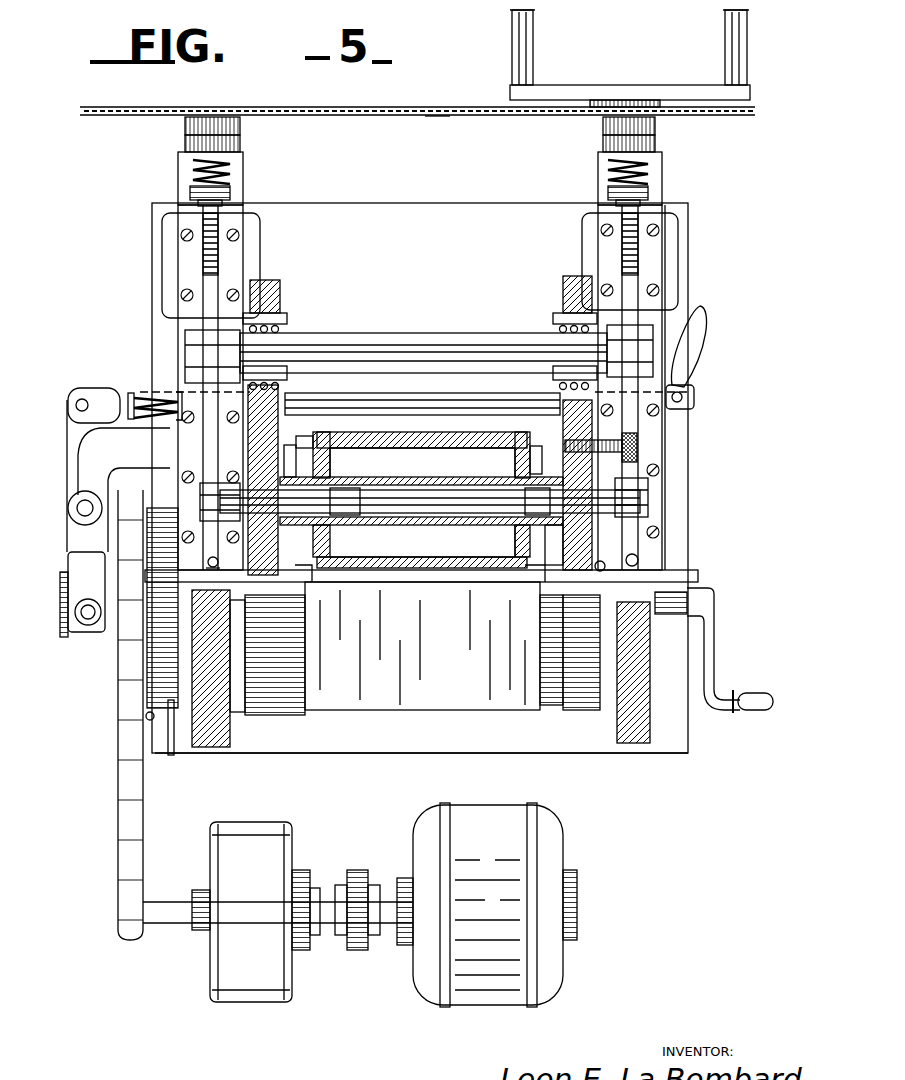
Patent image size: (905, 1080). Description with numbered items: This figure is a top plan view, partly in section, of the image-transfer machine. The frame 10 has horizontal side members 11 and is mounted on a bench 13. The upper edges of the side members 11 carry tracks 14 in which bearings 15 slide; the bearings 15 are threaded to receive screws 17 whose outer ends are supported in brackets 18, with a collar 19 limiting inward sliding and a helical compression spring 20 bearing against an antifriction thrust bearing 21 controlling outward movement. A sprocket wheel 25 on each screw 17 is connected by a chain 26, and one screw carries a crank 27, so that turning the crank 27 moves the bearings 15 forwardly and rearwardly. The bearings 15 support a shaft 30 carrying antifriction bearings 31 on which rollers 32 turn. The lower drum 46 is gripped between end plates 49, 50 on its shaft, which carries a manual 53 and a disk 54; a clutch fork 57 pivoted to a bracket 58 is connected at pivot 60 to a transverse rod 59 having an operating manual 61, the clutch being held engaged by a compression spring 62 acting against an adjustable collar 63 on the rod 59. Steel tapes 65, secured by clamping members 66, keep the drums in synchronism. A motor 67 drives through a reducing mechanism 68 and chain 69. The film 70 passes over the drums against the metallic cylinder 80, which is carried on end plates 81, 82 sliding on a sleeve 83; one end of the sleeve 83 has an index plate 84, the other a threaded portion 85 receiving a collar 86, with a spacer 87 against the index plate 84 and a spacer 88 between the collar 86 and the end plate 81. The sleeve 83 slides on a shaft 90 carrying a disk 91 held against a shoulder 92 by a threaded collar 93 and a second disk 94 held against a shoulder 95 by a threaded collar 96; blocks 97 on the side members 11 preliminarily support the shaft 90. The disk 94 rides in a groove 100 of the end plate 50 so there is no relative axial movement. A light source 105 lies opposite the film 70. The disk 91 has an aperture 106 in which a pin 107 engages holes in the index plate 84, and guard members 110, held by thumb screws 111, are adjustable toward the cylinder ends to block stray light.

The frame 10 is at (698, 519).
The side members 11 is at (215, 748).
The support or bench 13 is at (415, 753).
The tracks or ways 14 is at (245, 252).
The bearings 15 is at (185, 337).
The screws 17 is at (204, 250).
The brackets or bearings 18 is at (240, 142).
The collar 19 is at (185, 132).
The helical compression spring 20 is at (235, 168).
The antifriction thrust bearing 21 is at (232, 193).
The sprocket wheel 25 is at (182, 108).
The chain 26 is at (440, 117).
The crank or operating manual 27 is at (652, 86).
The shaft 30 is at (387, 333).
The antifriction bearings 31 is at (287, 322).
The disks or rollers 32 is at (280, 296).
The drum 46 is at (548, 706).
The end plate 49 is at (575, 712).
The end plate 50 is at (236, 712).
The manual 53 is at (718, 657).
The disk 54 is at (150, 665).
The fork or yoke 57 is at (68, 545).
The bracket 58 is at (78, 478).
The rod 59 is at (428, 395).
The pivotal connection 60 is at (86, 396).
The operating manual 61 is at (704, 346).
The helical compression spring 62 is at (163, 392).
The adjustable collar 63 is at (131, 392).
The bands or steel tapes 65 is at (146, 716).
The clamping members 66 is at (170, 755).
The motor 67 is at (497, 818).
The reducing mechanism 68 is at (262, 828).
The chain 69 is at (118, 818).
The film 70 is at (421, 582).
The metallic cylinder 80 is at (455, 432).
The end plate 81 is at (330, 462).
The end plate 82 is at (515, 458).
The sleeve 83 is at (402, 478).
The index plate 84 is at (563, 440).
The threaded end 85 is at (300, 437).
The collar 86 is at (290, 446).
The spacer 87 is at (537, 474).
The spacer 88 is at (330, 541).
The shaft 90 is at (433, 525).
The disk 91 is at (560, 535).
The shoulder 92 is at (515, 541).
The threaded collar 93 is at (606, 556).
The disk 94 is at (248, 450).
The shoulder 95 is at (350, 490).
The threaded collar 96 is at (225, 560).
The blocks 97 is at (204, 483).
The peripheral groove or recess 100 is at (275, 714).
The light source 105 is at (422, 646).
The aperture 106 is at (592, 440).
The pin 107 is at (637, 446).
The guard members 110 is at (312, 580).
The thumb screws 111 is at (640, 560).